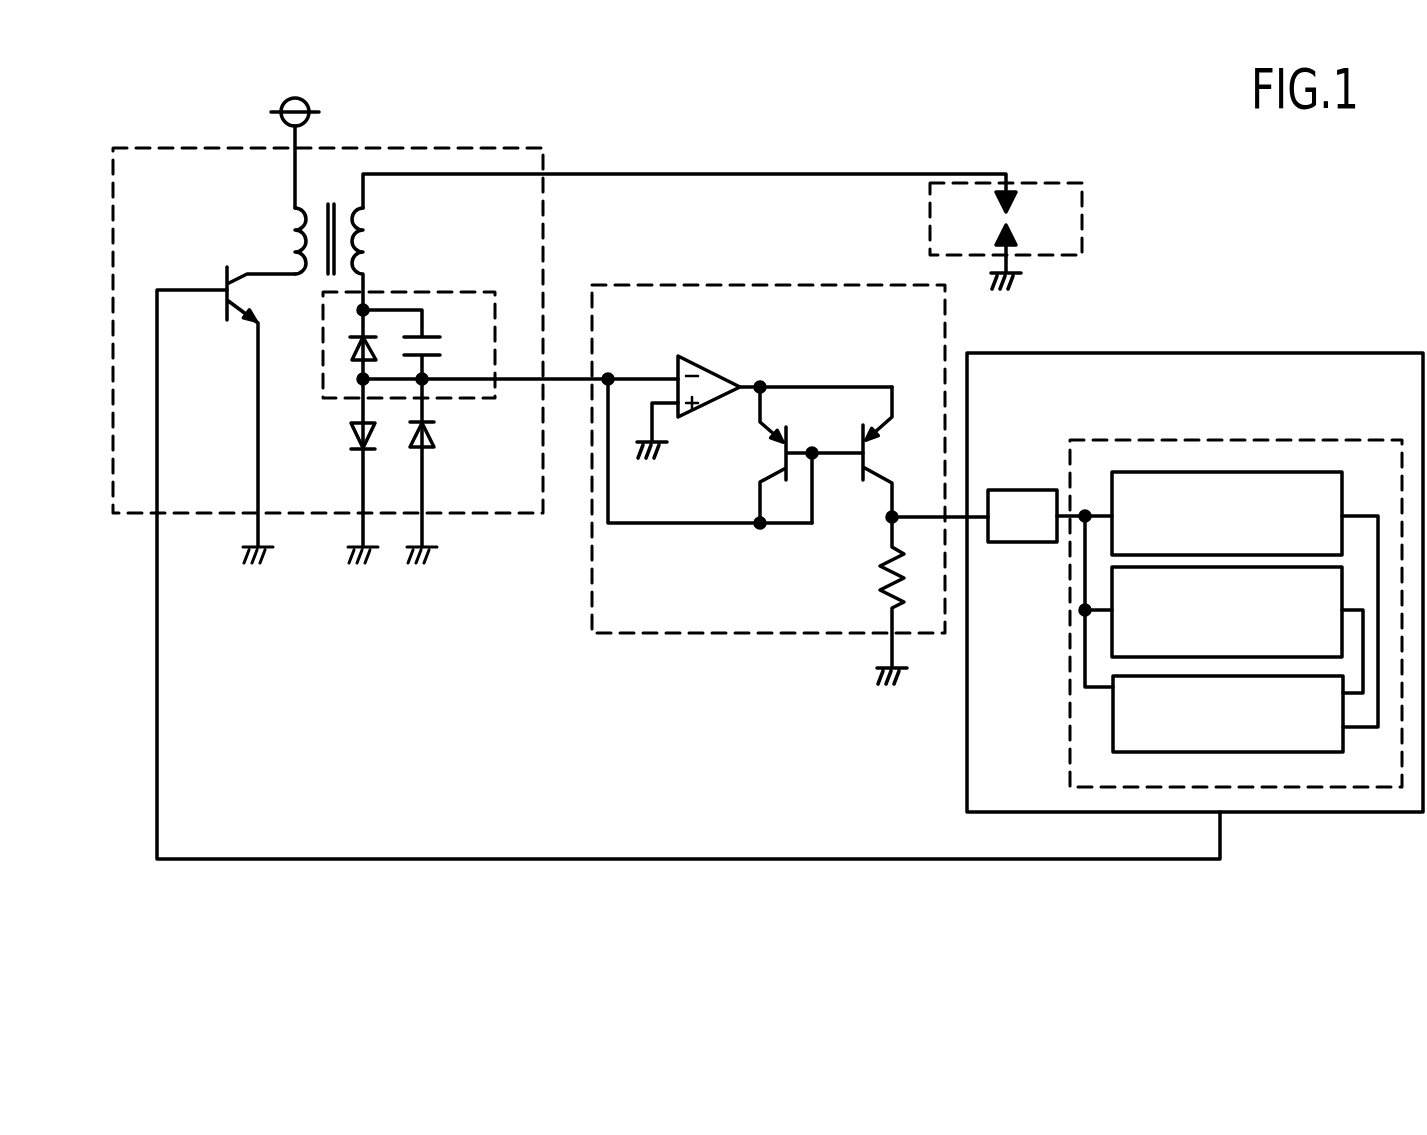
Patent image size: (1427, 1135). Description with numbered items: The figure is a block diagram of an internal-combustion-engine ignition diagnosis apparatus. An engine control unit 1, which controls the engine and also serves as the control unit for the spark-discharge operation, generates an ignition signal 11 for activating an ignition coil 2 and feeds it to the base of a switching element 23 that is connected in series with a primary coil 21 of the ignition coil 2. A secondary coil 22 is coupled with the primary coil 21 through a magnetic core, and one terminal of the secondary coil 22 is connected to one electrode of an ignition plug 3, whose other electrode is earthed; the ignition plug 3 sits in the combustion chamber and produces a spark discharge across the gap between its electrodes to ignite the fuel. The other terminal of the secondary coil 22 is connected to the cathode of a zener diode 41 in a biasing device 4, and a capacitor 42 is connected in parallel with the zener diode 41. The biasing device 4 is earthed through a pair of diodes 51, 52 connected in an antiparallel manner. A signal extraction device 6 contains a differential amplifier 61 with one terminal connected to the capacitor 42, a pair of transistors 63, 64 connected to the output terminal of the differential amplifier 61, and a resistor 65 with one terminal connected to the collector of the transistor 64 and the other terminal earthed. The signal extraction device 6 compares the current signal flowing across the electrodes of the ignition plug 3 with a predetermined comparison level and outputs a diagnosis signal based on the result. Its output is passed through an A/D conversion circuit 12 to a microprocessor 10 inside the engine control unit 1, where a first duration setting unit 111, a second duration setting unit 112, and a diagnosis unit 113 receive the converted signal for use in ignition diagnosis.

The engine control unit 1 is at (1290, 351).
The ignition coil 2 is at (365, 148).
The ignition plug 3 is at (1045, 182).
The biasing device 4 is at (495, 318).
The signal extraction device 6 is at (733, 285).
The microprocessor 10 is at (1227, 438).
The ignition signal 11 is at (792, 860).
The A/D conversion circuit 12 is at (1022, 490).
The primary coil 21 is at (283, 235).
The secondary coil 22 is at (373, 242).
The switching element 23 is at (233, 325).
The zener diode 41 is at (345, 355).
The capacitor 42 is at (435, 322).
The diode 51 is at (347, 432).
The diode 52 is at (442, 435).
The differential amplifier 61 is at (723, 372).
The transistor 63 is at (760, 450).
The transistor 64 is at (867, 485).
The resistor 65 is at (873, 582).
The first duration setting unit 111 is at (1343, 493).
The second duration setting unit 112 is at (1113, 633).
The diagnosis unit 113 is at (1293, 752).